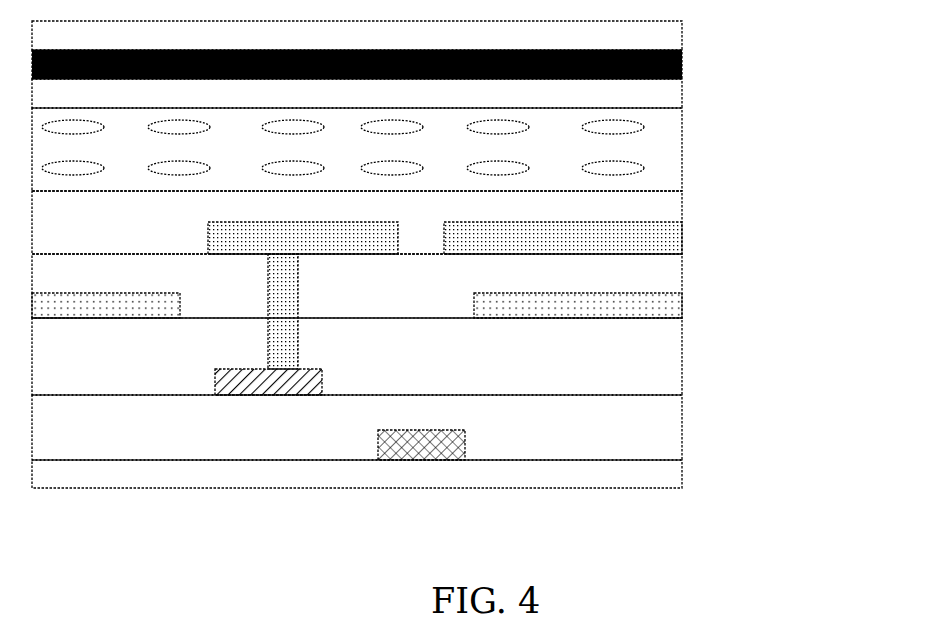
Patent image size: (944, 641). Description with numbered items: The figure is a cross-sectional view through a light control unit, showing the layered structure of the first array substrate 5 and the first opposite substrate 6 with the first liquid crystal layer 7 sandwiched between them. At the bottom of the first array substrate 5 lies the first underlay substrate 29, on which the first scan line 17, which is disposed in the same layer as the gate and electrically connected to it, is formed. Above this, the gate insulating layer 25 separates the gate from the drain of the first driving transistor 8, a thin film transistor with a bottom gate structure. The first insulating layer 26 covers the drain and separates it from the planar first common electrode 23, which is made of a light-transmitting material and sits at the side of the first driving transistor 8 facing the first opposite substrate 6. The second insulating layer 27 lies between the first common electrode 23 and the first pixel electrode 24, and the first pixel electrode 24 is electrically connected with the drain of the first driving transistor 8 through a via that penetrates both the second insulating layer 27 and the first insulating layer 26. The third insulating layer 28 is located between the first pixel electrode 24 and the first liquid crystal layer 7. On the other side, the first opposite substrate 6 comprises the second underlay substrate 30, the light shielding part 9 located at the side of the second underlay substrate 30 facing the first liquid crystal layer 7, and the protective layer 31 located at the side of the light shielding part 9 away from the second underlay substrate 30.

The first array substrate 5 is at (463, 368).
The first opposite substrate 6 is at (437, 62).
The first liquid crystal layer 7 is at (682, 150).
The first driving transistor 8 is at (268, 395).
The light shielding part 9 is at (682, 65).
The first scan line 17 is at (420, 460).
The first common electrode 23 is at (682, 305).
The first pixel electrode 24 is at (682, 239).
The gate insulating layer 25 is at (682, 428).
The first insulating layer 26 is at (682, 360).
The second insulating layer 27 is at (682, 267).
The third insulating layer 28 is at (682, 203).
The first underlay substrate 29 is at (411, 476).
The second underlay substrate 30 is at (682, 35).
The protective layer 31 is at (409, 92).